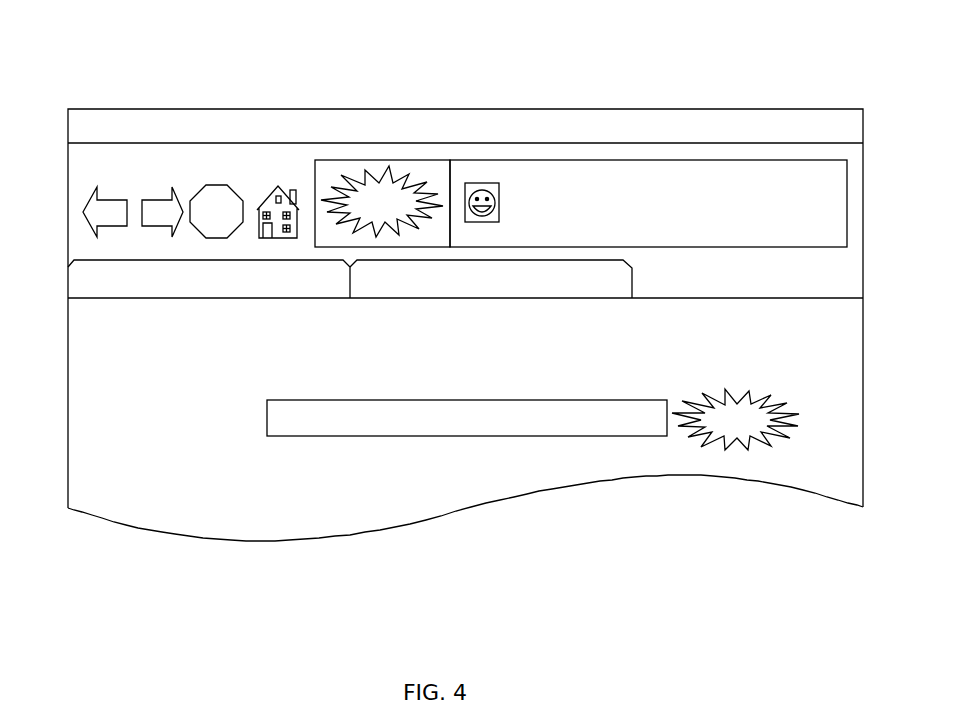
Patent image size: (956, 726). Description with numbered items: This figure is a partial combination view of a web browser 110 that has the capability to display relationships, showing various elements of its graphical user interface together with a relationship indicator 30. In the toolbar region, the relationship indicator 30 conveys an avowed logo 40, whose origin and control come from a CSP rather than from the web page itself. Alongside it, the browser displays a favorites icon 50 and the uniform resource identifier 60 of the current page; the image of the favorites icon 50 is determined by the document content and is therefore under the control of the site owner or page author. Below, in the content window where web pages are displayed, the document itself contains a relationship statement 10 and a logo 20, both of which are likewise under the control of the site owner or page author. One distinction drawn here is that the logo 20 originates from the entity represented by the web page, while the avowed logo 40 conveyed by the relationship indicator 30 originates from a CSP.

The relationship statement 10 is at (467, 436).
The logo 20 is at (770, 437).
The relationship indicator 30 is at (333, 160).
The avowed logo 40 is at (378, 178).
The favorites icon 50 is at (482, 183).
The uniform resource identifier 60 is at (613, 197).
The web browser 110 is at (85, 567).